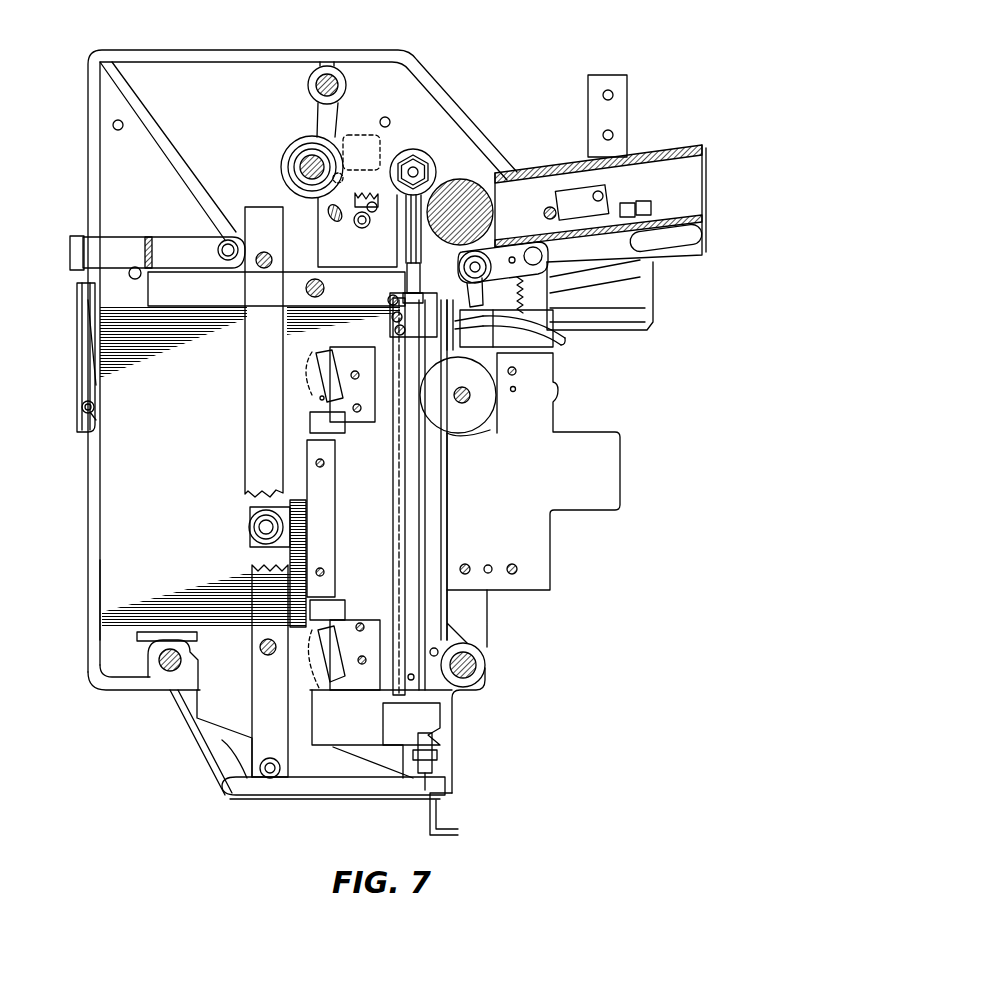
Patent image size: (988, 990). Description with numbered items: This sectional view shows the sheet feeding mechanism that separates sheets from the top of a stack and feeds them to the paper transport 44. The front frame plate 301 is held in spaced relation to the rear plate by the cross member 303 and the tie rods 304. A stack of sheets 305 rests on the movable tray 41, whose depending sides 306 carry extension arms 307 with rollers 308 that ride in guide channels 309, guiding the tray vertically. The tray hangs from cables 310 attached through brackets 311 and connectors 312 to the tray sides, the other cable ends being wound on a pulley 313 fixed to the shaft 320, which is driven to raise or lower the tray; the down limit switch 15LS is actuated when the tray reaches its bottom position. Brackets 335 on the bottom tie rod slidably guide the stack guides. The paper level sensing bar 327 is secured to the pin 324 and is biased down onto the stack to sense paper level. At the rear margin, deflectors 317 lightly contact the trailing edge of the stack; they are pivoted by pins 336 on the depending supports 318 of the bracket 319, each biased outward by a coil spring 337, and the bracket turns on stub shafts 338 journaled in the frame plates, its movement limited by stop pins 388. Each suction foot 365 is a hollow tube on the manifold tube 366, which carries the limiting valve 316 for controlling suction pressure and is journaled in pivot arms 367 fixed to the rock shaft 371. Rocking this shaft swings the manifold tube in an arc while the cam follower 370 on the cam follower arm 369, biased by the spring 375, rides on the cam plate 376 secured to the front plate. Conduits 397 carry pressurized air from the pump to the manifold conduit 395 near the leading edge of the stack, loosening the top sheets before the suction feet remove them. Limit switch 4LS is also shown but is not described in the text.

The front frame plate 301 is at (248, 52).
The tie rods 304 is at (308, 86).
The pivot arms 367 is at (338, 137).
The cam plate 376 is at (362, 143).
The limiting valve 316 is at (413, 155).
The manifold tube 366 is at (433, 166).
The rock shaft 371 is at (300, 168).
The spring 375 is at (357, 185).
The stub shafts 338 is at (228, 240).
The bracket 319 is at (122, 237).
The cam follower arm 369 is at (370, 222).
The suction foot 365 is at (428, 292).
The cam follower 370 is at (357, 231).
The deflectors 317 is at (90, 306).
The paper level sensing bar 327 is at (148, 298).
The stop pins 388 is at (141, 277).
The pin 324 is at (322, 296).
The limit switch 4LS is at (330, 350).
The conduits 397 is at (567, 340).
The coil spring 337 is at (96, 392).
The depending supports 318 is at (82, 406).
The pins 336 is at (96, 408).
The manifold conduit 395 is at (458, 395).
The shaft 320 is at (472, 398).
The cross member 303 is at (563, 420).
The pulley 313 is at (465, 435).
The guide channels 309 is at (247, 466).
The cables 310 is at (425, 505).
The rollers 308 is at (249, 527).
The extension arms 307 is at (250, 568).
The stack of sheets 305 is at (102, 612).
The tray 41 is at (138, 638).
The brackets 335 is at (472, 690).
The down limit switch 15LS is at (355, 689).
The brackets 311 is at (440, 730).
The connectors 312 is at (437, 755).
The depending sides 306 is at (212, 760).
The paper transport 44 is at (572, 152).